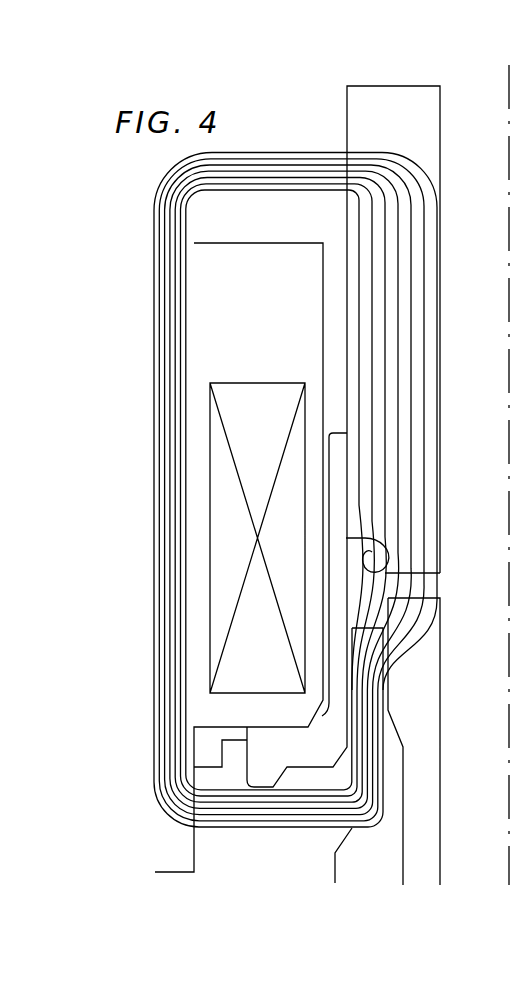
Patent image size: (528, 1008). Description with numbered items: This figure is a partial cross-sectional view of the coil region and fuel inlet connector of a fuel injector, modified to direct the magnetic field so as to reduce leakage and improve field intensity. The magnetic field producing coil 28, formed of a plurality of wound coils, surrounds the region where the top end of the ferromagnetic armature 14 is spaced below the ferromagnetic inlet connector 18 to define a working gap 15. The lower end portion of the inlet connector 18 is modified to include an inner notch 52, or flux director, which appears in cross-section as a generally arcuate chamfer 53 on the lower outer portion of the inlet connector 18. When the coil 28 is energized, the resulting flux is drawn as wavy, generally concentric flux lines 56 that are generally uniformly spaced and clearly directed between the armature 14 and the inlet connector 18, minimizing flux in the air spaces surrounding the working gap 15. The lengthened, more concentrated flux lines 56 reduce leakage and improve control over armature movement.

The armature 14 is at (420, 712).
The working gap 15 is at (418, 590).
The inlet connector 18 is at (430, 173).
The coil 28 is at (258, 413).
The inner notch 52 is at (346, 574).
The arcuate chamfer 53 is at (400, 571).
The flux lines 56 is at (417, 630).